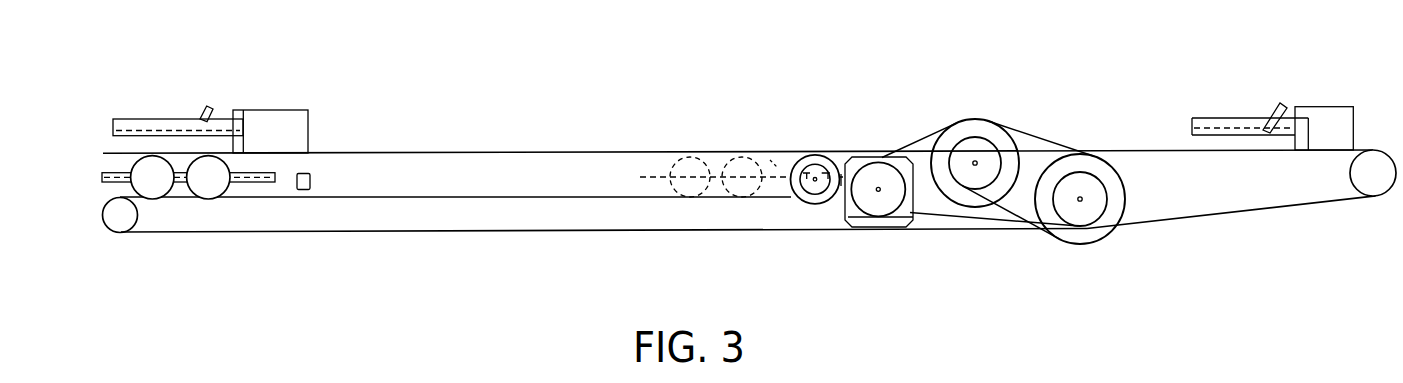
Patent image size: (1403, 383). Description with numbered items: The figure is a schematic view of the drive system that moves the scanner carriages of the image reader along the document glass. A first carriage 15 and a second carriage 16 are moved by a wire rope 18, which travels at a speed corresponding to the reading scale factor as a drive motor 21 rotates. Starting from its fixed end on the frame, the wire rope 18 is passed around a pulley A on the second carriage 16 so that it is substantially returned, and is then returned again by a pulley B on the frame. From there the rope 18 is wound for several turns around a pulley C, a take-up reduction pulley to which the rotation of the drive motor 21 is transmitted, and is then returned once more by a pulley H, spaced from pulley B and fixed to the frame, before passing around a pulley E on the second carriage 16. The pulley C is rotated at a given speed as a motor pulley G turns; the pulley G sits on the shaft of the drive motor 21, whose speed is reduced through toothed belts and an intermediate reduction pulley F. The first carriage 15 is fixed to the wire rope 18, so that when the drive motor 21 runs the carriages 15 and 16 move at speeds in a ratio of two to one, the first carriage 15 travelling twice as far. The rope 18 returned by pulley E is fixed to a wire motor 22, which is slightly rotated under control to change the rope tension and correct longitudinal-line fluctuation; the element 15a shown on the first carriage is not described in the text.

The first carriage 15 is at (245, 110).
The sheet feed guide plate 15a is at (209, 106).
The second carriage 16 is at (311, 181).
The wire rope 18 is at (556, 197).
The drive motor 21 is at (895, 227).
The wire motor 22 is at (818, 154).
The pulley A is at (158, 187).
The pulley B is at (123, 223).
The take-up pulley C is at (1087, 217).
The pulley E is at (222, 188).
The intermediate reduction pulley F is at (990, 118).
The motor pulley G is at (870, 207).
The pulley H is at (1373, 190).